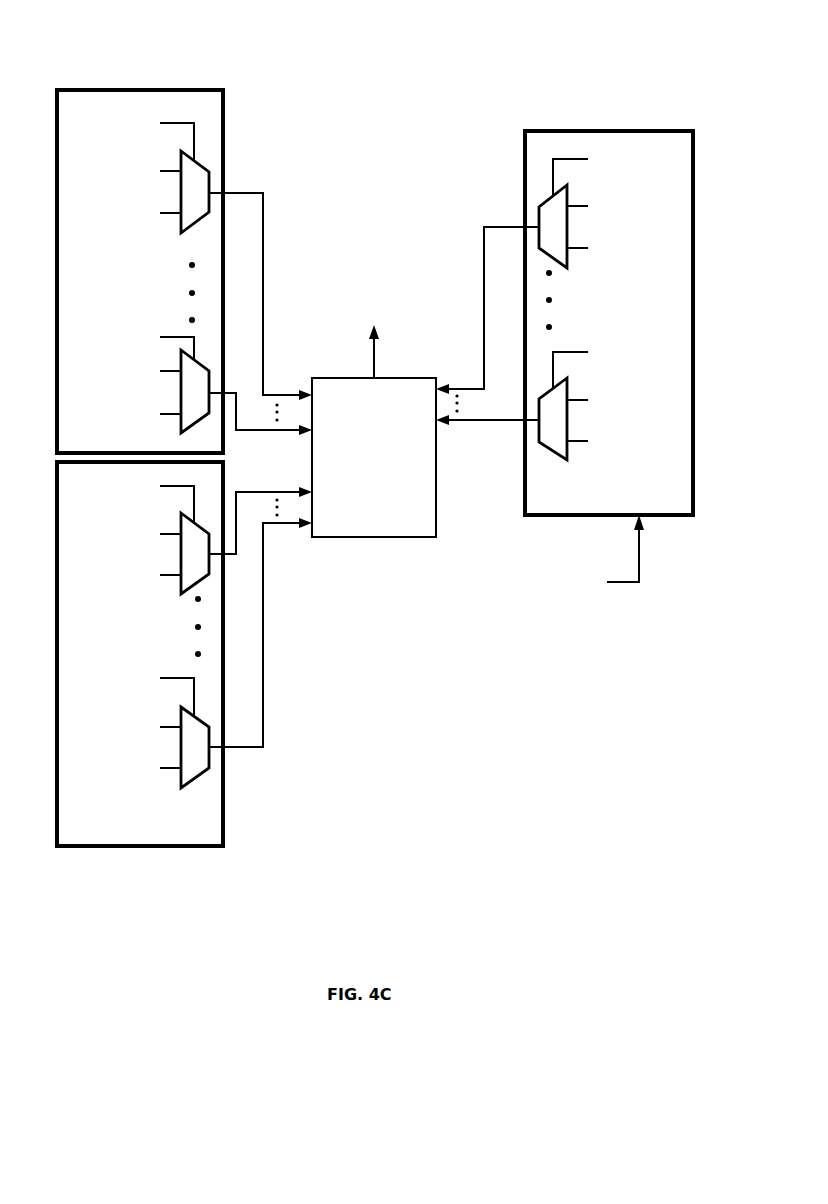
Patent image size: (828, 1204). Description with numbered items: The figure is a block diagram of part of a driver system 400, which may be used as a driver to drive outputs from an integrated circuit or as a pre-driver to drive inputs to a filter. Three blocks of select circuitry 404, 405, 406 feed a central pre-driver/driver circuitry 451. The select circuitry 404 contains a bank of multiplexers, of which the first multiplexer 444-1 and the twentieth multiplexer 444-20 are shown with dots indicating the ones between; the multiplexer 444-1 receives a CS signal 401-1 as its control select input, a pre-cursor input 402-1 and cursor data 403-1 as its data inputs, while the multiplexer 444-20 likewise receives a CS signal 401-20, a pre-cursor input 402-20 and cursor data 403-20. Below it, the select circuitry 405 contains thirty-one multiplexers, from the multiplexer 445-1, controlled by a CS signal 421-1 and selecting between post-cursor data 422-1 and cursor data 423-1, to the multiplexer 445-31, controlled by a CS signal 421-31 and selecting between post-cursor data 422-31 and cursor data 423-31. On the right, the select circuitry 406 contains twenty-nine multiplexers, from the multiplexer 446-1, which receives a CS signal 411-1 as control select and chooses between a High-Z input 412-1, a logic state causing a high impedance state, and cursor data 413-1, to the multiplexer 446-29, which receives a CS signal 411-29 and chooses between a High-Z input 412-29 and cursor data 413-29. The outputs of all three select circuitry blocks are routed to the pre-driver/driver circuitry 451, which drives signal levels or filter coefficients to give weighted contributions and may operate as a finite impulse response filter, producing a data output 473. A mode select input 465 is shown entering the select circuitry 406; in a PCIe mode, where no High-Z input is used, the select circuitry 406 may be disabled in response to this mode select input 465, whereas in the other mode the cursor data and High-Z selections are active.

The driver system 400 is at (148, 909).
The select circuitry 404 is at (223, 166).
The select circuitry 405 is at (223, 806).
The select circuitry 406 is at (555, 517).
The pre-driver/driver circuitry 451 is at (388, 500).
The data output 473 is at (381, 330).
The mode select input 465 is at (607, 582).
The CS signal 401-1 is at (160, 123).
The pre-cursor input 402-1 is at (160, 171).
The cursor data 403-1 is at (160, 213).
The multiplexer 444-1 is at (193, 234).
The CS signal 401-20 is at (160, 337).
The pre-cursor input 402-20 is at (160, 371).
The cursor data 403-20 is at (160, 414).
The multiplexer 444-20 is at (193, 434).
The CS signal 421-1 is at (160, 486).
The post-cursor data 422-1 is at (160, 534).
The cursor data 423-1 is at (160, 575).
The multiplexer 445-1 is at (186, 596).
The CS signal 421-31 is at (160, 678).
The post-cursor data 422-31 is at (160, 727).
The cursor data 423-31 is at (160, 768).
The multiplexer 445-31 is at (186, 790).
The CS signal 411-1 is at (588, 159).
The High-Z input 412-1 is at (588, 206).
The cursor data 413-1 is at (588, 248).
The multiplexer 446-1 is at (553, 259).
The CS signal 411-29 is at (588, 352).
The High-Z input 412-29 is at (588, 400).
The cursor data 413-29 is at (588, 441).
The multiplexer 446-29 is at (558, 455).